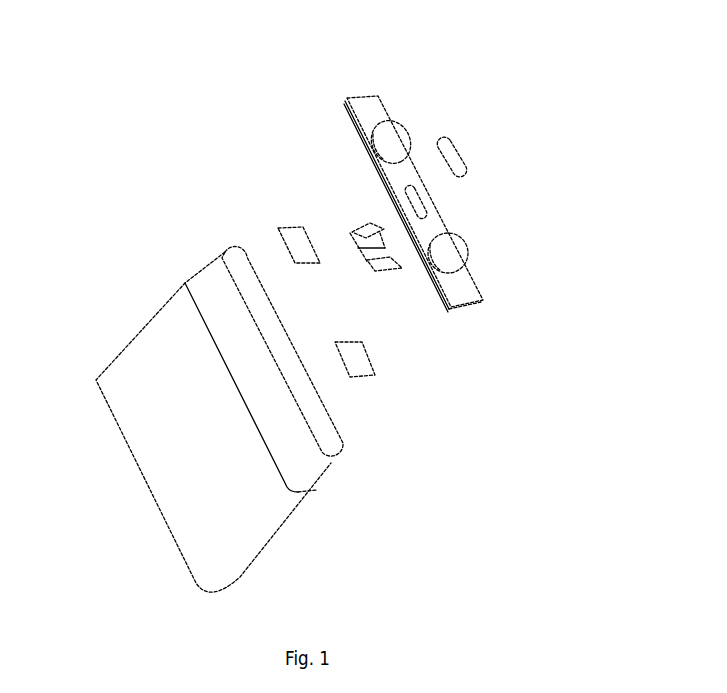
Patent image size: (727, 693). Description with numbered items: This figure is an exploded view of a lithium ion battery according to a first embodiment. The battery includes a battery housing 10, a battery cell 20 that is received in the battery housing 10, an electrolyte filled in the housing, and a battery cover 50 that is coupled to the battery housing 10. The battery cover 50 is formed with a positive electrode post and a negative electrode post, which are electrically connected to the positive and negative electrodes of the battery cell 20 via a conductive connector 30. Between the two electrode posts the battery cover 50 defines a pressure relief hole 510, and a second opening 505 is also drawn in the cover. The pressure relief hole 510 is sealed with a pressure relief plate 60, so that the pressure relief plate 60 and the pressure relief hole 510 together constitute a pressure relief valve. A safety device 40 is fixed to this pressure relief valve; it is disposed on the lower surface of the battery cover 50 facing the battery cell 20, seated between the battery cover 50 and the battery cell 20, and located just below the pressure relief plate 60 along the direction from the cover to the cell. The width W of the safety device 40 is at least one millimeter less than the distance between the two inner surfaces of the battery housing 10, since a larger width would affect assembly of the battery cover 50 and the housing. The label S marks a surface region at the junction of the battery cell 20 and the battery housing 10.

The battery housing 10 is at (248, 547).
The battery cell 20 is at (310, 465).
The conductive connector 30 is at (355, 363).
The safety device 40 is at (363, 225).
The battery cover 50 is at (457, 292).
The through hole 505 is at (450, 253).
The pressure relief hole 510 is at (418, 205).
The pressure relief plate 60 is at (450, 157).
The side surface S is at (320, 490).
The width of the safety device W is at (311, 247).